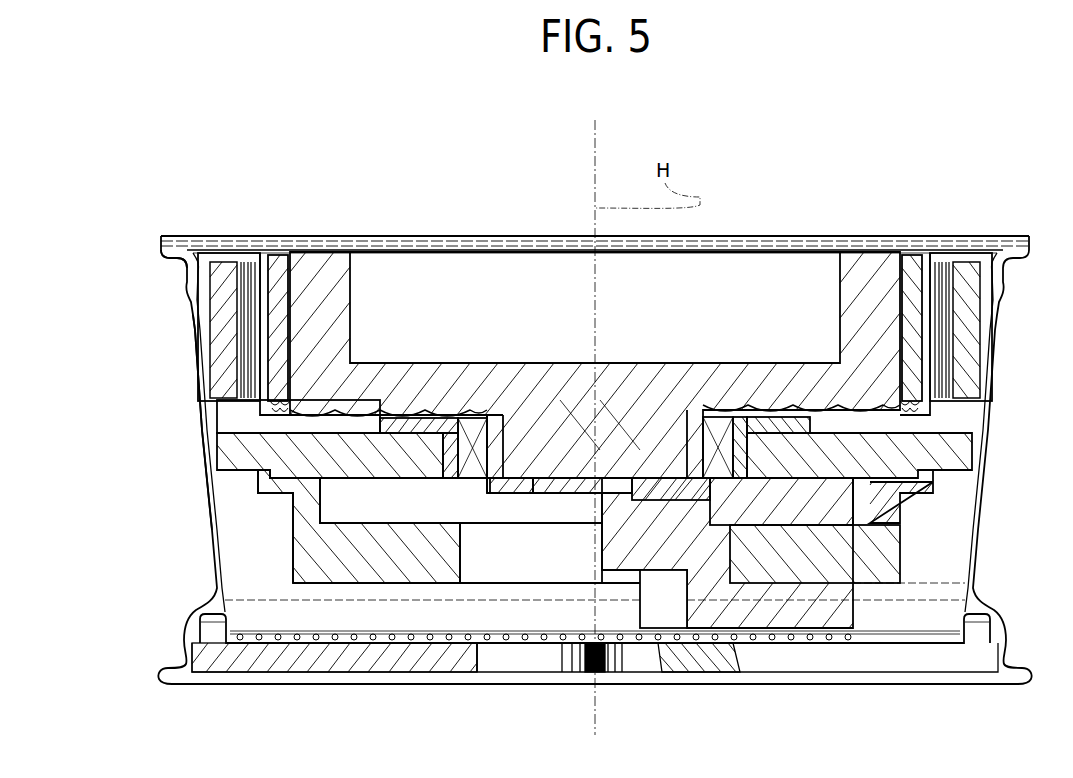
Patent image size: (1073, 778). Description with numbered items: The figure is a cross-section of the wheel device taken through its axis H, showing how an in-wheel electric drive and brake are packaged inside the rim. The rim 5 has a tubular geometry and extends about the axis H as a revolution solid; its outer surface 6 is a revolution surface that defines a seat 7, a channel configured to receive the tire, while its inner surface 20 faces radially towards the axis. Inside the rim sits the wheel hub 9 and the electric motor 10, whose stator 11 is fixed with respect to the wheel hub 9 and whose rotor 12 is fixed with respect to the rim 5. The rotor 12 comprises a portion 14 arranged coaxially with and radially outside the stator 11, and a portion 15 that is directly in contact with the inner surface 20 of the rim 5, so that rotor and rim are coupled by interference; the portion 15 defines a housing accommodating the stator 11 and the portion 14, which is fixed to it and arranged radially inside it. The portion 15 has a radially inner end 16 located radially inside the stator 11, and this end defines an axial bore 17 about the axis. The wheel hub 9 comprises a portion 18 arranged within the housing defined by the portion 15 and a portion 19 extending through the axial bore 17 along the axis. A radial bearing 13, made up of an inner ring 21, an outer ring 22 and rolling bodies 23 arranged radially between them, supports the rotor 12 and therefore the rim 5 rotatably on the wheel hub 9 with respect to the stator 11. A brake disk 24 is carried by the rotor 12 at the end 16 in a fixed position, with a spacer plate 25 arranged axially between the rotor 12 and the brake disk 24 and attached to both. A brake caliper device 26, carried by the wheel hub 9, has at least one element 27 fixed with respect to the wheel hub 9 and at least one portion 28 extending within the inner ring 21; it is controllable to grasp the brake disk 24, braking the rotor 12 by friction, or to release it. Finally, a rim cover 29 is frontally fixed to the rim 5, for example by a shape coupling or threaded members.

The rim 5 is at (210, 548).
The outer surface 6 is at (197, 424).
The seat 7 is at (170, 262).
The wheel hub 9 is at (332, 320).
The electric motor 10 is at (233, 246).
The stator 11 is at (283, 262).
The rotor 12 is at (220, 450).
The radial bearing 13 is at (470, 481).
The portion 14 is at (222, 333).
The portion 15 is at (234, 450).
The radially inner end 16 is at (322, 447).
The axial bore 17 is at (738, 455).
The portion 18 is at (865, 303).
The portion 19 is at (585, 440).
The inner surface 20 is at (220, 530).
The inner ring 21 is at (500, 397).
The outer ring 22 is at (448, 430).
The rolling bodies 23 is at (482, 483).
The brake disk 24 is at (892, 553).
The spacer plate 25 is at (892, 507).
The brake caliper device 26 is at (602, 548).
The element 27 is at (600, 507).
The portion 28 is at (618, 440).
The rim cover 29 is at (222, 665).